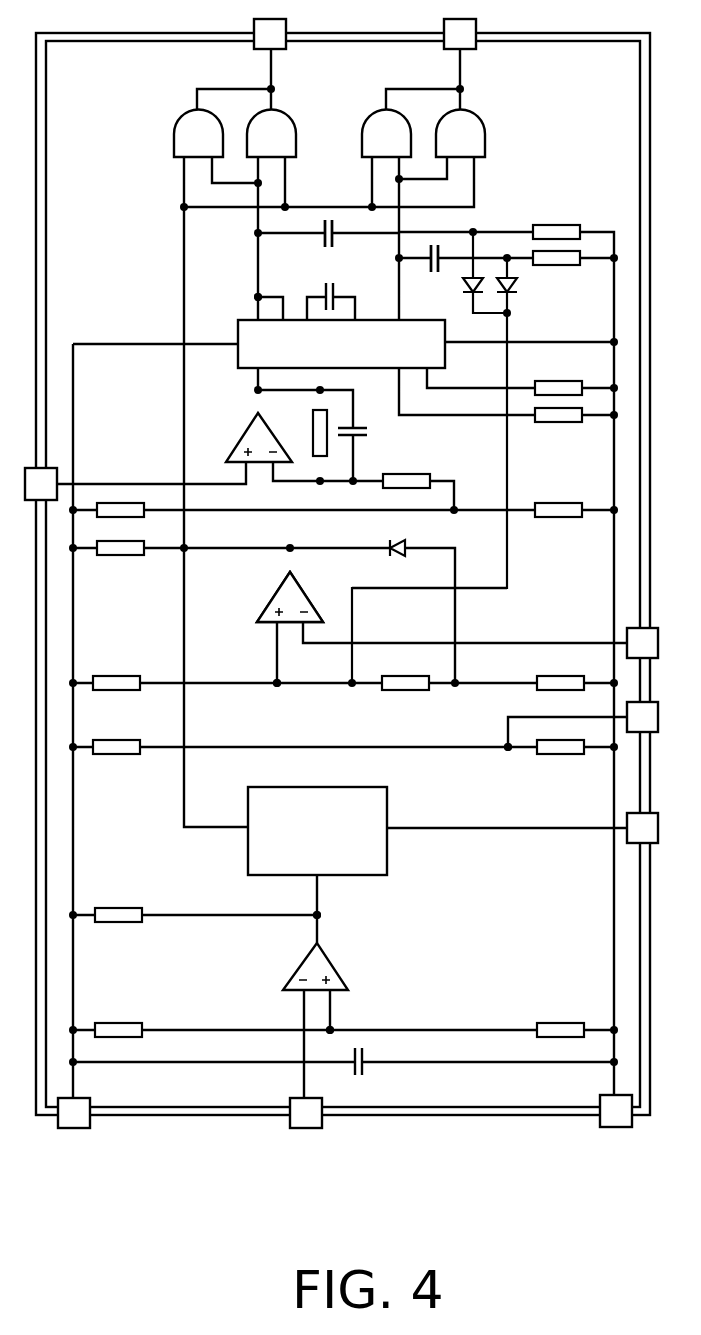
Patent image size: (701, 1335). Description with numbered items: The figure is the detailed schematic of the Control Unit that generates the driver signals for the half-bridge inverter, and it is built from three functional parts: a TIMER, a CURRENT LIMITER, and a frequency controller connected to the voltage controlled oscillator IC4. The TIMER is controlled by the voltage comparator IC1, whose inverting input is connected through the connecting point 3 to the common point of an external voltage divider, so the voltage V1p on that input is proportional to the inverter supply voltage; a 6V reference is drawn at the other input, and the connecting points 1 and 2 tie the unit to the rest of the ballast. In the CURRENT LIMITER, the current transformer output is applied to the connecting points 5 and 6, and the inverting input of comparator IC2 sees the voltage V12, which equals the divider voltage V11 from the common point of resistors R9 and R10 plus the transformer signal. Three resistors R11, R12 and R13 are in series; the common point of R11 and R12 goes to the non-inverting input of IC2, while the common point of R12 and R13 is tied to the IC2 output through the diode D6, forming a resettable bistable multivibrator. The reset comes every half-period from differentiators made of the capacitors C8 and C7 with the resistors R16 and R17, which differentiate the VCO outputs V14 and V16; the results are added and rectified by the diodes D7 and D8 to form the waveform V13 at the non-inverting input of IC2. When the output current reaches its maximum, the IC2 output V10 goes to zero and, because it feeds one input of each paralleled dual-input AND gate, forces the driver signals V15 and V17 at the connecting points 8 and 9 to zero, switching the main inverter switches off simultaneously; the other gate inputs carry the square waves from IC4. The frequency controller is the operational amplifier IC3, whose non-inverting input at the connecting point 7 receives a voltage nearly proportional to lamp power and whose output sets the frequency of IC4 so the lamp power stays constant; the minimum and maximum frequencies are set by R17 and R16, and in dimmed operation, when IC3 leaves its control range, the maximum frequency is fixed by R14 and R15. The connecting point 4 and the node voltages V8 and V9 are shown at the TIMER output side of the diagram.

The connecting point 1 is at (74, 1113).
The connecting point 2 is at (616, 1111).
The connecting point 3 is at (306, 1113).
The connecting point 4 is at (642, 828).
The connecting point 5 is at (642, 717).
The connecting point 6 is at (642, 643).
The connecting point 7 is at (41, 484).
The connecting point 8 is at (270, 34).
The connecting point 9 is at (460, 34).
The driver signal V15 is at (267, 72).
The driver signal V17 is at (463, 68).
The VCO output signal V14 is at (257, 283).
The VCO output signal V16 is at (395, 285).
The inverting input voltage of comparator V12 is at (505, 638).
The non-inverting input waveform V13 is at (282, 693).
The divider voltage V11 is at (498, 753).
The Current Limiter output voltage V10 is at (180, 783).
The voltage V9 is at (570, 818).
The voltage V8 is at (330, 915).
The inverting input voltage of IC1 V1p is at (297, 1018).
The six volt reference 6V is at (337, 1025).
The differentiator capacitor C8 is at (343, 229).
The differentiator capacitor C7 is at (449, 253).
The differentiator resistor R17 is at (566, 219).
The differentiator resistor R16 is at (565, 273).
The rectifying diode D7 is at (467, 272).
The rectifying diode D8 is at (448, 470).
The voltage controlled oscillator IC4 is at (341, 344).
The frequency setting resistor R15 is at (558, 373).
The frequency setting resistor R14 is at (558, 426).
The operational amplifier IC3 is at (247, 433).
The diode D6 is at (389, 535).
The Current Limiter CURRENT LIMITER is at (258, 587).
The voltage comparator IC2 is at (295, 589).
The series resistor R11 is at (116, 670).
The series resistor R12 is at (405, 670).
The series resistor R13 is at (560, 672).
The voltage divider resistor R9 is at (116, 733).
The voltage divider resistor R10 is at (517, 737).
The Timer TIMER is at (317, 831).
The voltage comparator IC1 is at (334, 966).